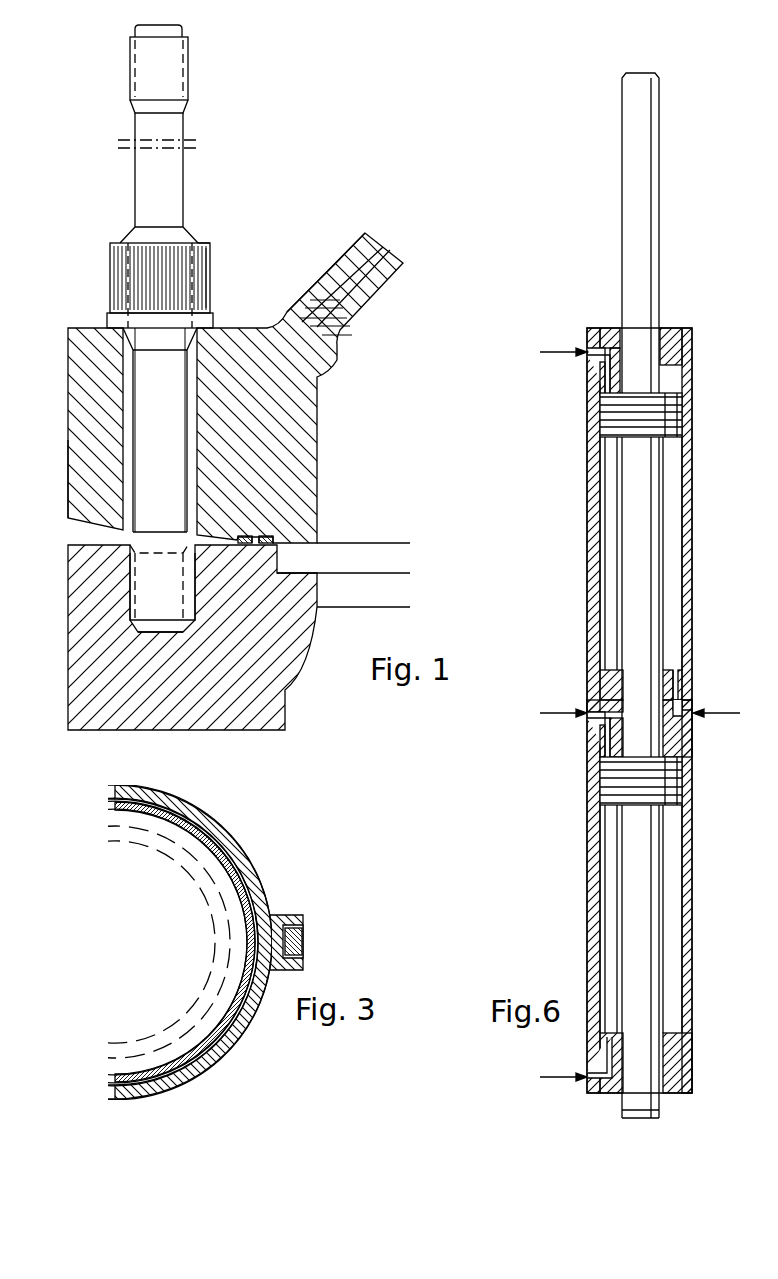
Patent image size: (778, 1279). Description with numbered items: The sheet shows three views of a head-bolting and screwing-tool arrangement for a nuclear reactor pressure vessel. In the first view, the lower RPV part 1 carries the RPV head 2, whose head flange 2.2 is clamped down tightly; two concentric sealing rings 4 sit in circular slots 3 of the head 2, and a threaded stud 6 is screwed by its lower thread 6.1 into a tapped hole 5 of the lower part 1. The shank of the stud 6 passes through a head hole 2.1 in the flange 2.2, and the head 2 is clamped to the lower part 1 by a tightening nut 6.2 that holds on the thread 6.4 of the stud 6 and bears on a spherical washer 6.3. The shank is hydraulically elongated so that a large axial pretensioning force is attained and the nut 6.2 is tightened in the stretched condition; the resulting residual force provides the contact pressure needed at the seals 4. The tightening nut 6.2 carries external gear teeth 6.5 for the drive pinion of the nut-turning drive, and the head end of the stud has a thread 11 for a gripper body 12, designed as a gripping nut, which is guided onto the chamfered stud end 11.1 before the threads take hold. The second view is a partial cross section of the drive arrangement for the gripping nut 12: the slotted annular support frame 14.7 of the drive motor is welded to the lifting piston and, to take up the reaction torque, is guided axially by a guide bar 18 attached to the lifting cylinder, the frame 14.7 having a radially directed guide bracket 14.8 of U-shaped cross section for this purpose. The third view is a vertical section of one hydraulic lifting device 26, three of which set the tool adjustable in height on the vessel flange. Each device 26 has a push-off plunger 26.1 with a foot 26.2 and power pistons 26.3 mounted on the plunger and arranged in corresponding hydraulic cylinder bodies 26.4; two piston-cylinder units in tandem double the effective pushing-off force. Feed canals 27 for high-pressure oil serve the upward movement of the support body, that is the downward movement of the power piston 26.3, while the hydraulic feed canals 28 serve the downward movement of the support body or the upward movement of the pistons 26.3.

In FIG. 1, the lower RPV part 1 is at (84, 683).
In FIG. 1, the RPV head 2 is at (82, 413).
In FIG. 1, the head hole 2.1 is at (197, 400).
In FIG. 1, the head flange 2.2 is at (84, 466).
In FIG. 1, the circular slot 3 is at (236, 535).
In FIG. 1, the sealing ring 4 is at (259, 536).
In FIG. 1, the tapped hole 5 is at (192, 590).
In FIG. 1, the threaded stud 6 is at (185, 170).
In FIG. 1, the lower thread 6.1 is at (131, 586).
In FIG. 1, the tightening nut 6.2 is at (110, 258).
In FIG. 1, the spherical washer 6.3 is at (106, 320).
In FIG. 1, the thread 6.4 is at (190, 243).
In FIG. 1, the external gear teeth 6.5 is at (206, 272).
In FIG. 1, the thread 11 is at (188, 78).
In FIG. 1, the chamfered stud end 11.1 is at (178, 32).
In FIG. 3, the gripper body 12 is at (202, 886).
In FIG. 3, the annular support frame 14.7 is at (247, 870).
In FIG. 3, the guide bracket 14.8 is at (284, 914).
In FIG. 3, the guide bar 18 is at (305, 943).
In FIG. 6, the hydraulic lifting device 26 is at (690, 483).
In FIG. 6, the push-off plunger 26.1 is at (648, 218).
In FIG. 6, the foot 26.2 is at (662, 1112).
In FIG. 6, the power piston 26.3 is at (672, 413).
In FIG. 6, the hydraulic cylinder body 26.4 is at (686, 551).
In FIG. 6, the feed canal 27 is at (582, 358).
In FIG. 6, the hydraulic feed canal 28 is at (695, 718).